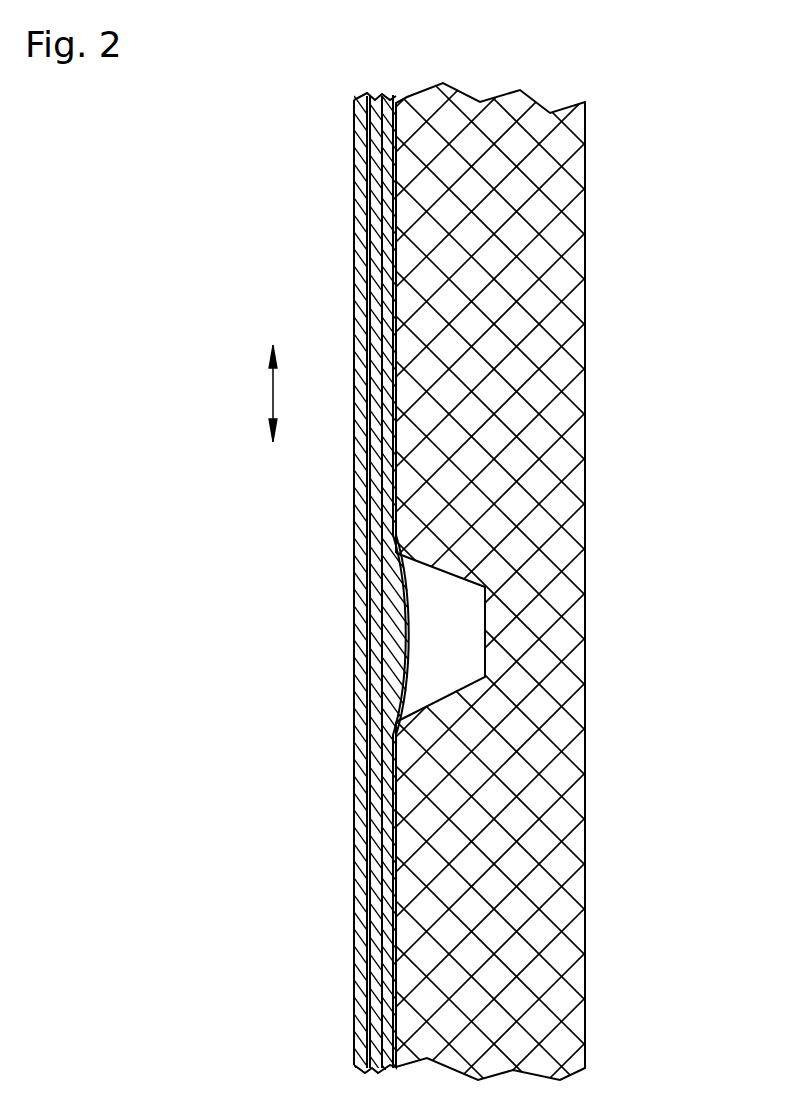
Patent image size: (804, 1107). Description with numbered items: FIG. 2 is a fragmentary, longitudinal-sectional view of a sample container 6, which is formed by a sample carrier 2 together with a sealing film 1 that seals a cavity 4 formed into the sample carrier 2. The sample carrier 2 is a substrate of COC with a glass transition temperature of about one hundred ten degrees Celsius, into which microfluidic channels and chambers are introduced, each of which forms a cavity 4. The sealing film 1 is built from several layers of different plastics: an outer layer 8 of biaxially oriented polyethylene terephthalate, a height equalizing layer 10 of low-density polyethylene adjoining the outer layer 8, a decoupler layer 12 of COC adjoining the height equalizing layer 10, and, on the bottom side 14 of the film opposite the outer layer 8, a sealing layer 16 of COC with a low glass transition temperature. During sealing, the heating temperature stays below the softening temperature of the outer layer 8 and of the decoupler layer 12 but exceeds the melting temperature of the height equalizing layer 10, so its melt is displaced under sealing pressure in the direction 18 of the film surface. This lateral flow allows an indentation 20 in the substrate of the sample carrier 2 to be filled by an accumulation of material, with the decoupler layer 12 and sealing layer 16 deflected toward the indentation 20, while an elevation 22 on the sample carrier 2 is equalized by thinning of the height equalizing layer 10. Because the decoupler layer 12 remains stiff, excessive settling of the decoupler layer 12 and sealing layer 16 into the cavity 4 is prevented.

The sealing film 1 is at (331, 150).
The sample carrier 2 is at (560, 84).
The cavity 4 is at (426, 618).
The sample container 6 is at (146, 258).
The outer layer 8 is at (357, 800).
The height equalizing layer 10 is at (357, 655).
The decoupler layer 12 is at (375, 696).
The bottom side 14 is at (251, 0).
The sealing layer 16 is at (355, 205).
The direction of the surface 18 is at (272, 388).
The indentation 20 is at (420, 931).
The elevation 22 is at (412, 347).